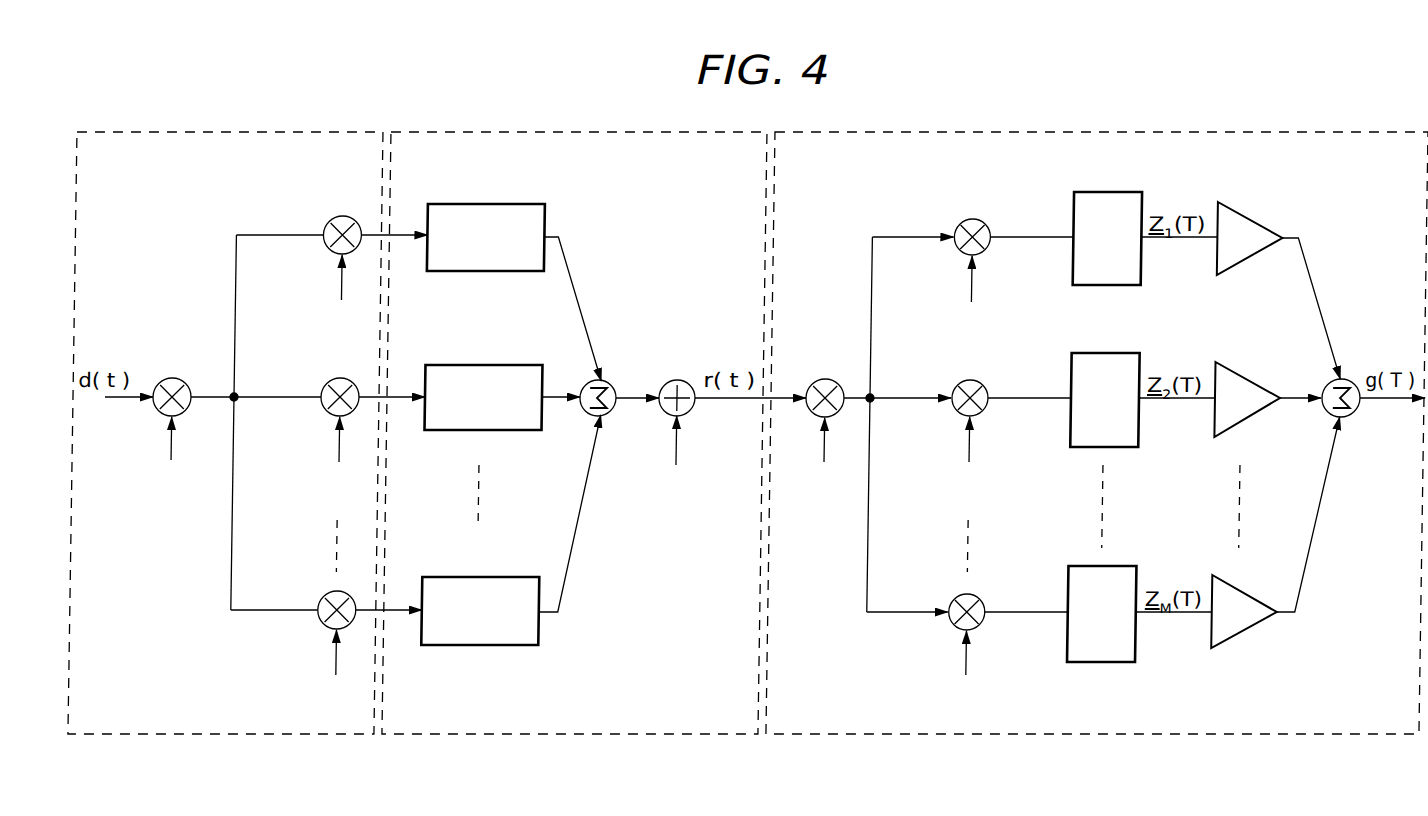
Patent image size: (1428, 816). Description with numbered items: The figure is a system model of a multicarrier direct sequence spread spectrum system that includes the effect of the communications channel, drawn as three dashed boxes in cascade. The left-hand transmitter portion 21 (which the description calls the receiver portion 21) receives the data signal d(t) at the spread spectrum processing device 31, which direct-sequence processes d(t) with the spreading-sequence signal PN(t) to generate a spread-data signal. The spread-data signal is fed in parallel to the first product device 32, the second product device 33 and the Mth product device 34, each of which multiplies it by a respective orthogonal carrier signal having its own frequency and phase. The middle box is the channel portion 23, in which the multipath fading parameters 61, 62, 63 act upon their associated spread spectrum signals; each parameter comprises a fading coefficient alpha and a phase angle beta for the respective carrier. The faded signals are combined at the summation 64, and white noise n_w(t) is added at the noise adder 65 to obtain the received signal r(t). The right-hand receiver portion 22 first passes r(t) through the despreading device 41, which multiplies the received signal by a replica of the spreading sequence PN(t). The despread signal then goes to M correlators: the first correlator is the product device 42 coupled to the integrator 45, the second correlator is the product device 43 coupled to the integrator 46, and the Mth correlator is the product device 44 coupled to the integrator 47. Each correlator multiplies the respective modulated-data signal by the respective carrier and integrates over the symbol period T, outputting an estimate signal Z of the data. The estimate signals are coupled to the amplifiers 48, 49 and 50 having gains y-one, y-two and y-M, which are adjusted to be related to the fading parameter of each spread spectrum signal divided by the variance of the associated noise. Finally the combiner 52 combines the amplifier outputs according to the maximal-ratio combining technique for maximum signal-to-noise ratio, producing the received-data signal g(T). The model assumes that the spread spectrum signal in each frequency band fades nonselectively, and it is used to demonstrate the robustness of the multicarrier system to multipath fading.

The transmitter portion 21 is at (233, 734).
The receiver demodulator section 22 is at (1117, 734).
The communications channel portion 23 is at (575, 734).
The spread spectrum processing device 31 is at (186, 384).
The first product device 32 is at (325, 249).
The second product device 33 is at (325, 411).
The Mth product device 34 is at (325, 624).
The despreading device 41 is at (825, 379).
The product device of first correlator 42 is at (956, 251).
The product device of second correlator 43 is at (956, 412).
The product device of Mth correlator 44 is at (956, 626).
The integrator of first correlator 45 is at (1105, 192).
The integrator of second correlator 46 is at (1107, 353).
The integrator of Mth correlator 47 is at (1107, 662).
The first amplifier 48 is at (1238, 210).
The second amplifier 49 is at (1240, 372).
The Mth amplifier 50 is at (1243, 638).
The combiner 52 is at (1330, 413).
The first multipath fading parameter 61 is at (482, 204).
The second multipath fading parameter 62 is at (483, 365).
The Mth multipath fading parameter 63 is at (485, 645).
The summation 64 is at (608, 382).
The noise adder 65 is at (676, 380).